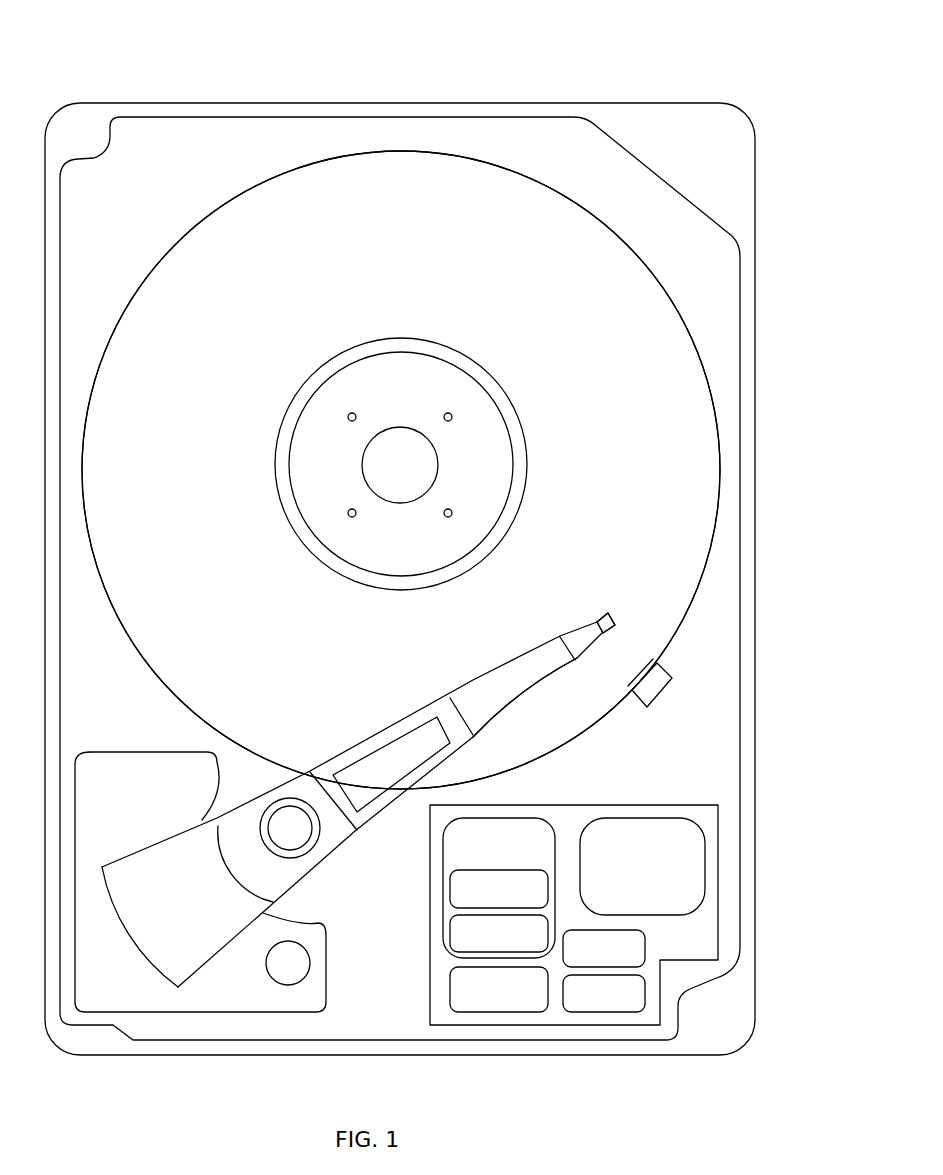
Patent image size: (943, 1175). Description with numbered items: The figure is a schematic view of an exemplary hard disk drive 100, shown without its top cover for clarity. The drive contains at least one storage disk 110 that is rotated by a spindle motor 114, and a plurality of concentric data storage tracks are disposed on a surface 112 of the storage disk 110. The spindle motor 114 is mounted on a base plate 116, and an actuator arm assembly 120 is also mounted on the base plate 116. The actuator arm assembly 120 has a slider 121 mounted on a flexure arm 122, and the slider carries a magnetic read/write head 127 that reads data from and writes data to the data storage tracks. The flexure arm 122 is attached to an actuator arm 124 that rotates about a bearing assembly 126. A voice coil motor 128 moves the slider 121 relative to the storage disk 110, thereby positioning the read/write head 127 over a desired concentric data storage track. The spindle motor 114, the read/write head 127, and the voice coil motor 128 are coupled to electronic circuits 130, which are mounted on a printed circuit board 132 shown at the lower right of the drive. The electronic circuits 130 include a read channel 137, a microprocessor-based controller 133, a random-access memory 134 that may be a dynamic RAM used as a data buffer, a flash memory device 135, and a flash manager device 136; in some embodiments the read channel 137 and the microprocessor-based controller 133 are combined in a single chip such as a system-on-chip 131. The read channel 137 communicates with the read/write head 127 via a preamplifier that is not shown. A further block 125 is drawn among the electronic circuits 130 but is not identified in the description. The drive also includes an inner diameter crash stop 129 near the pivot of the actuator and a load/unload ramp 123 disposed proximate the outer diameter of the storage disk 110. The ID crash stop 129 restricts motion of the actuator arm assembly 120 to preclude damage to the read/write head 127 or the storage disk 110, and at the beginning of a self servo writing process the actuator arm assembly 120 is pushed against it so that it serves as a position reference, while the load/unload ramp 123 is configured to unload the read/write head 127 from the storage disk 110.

The hard disk drive 100 is at (140, 73).
The storage disk 110 is at (177, 243).
The surface of storage disk 112 is at (206, 449).
The spindle motor 114 is at (496, 405).
The base plate 116 is at (742, 606).
The actuator arm assembly 120 is at (397, 718).
The slider 121 is at (613, 614).
The flexure arm 122 is at (575, 627).
The load/unload ramp 123 is at (664, 697).
The actuator arm 124 is at (476, 685).
The host interface 125 is at (519, 1002).
The bearing assembly 126 is at (307, 863).
The magnetic read/write head 127 is at (603, 605).
The voice coil motor 128 is at (330, 958).
The inner diameter crash stop 129 is at (290, 986).
The electronic circuits 130 is at (577, 869).
The system-on-chip 131 is at (519, 861).
The printed circuit board 132 is at (653, 803).
The microprocessor-based controller 133 is at (519, 905).
The random-access memory 134 is at (624, 962).
The flash memory device 135 is at (578, 817).
The flash manager device 136 is at (624, 1008).
The read channel 137 is at (519, 949).